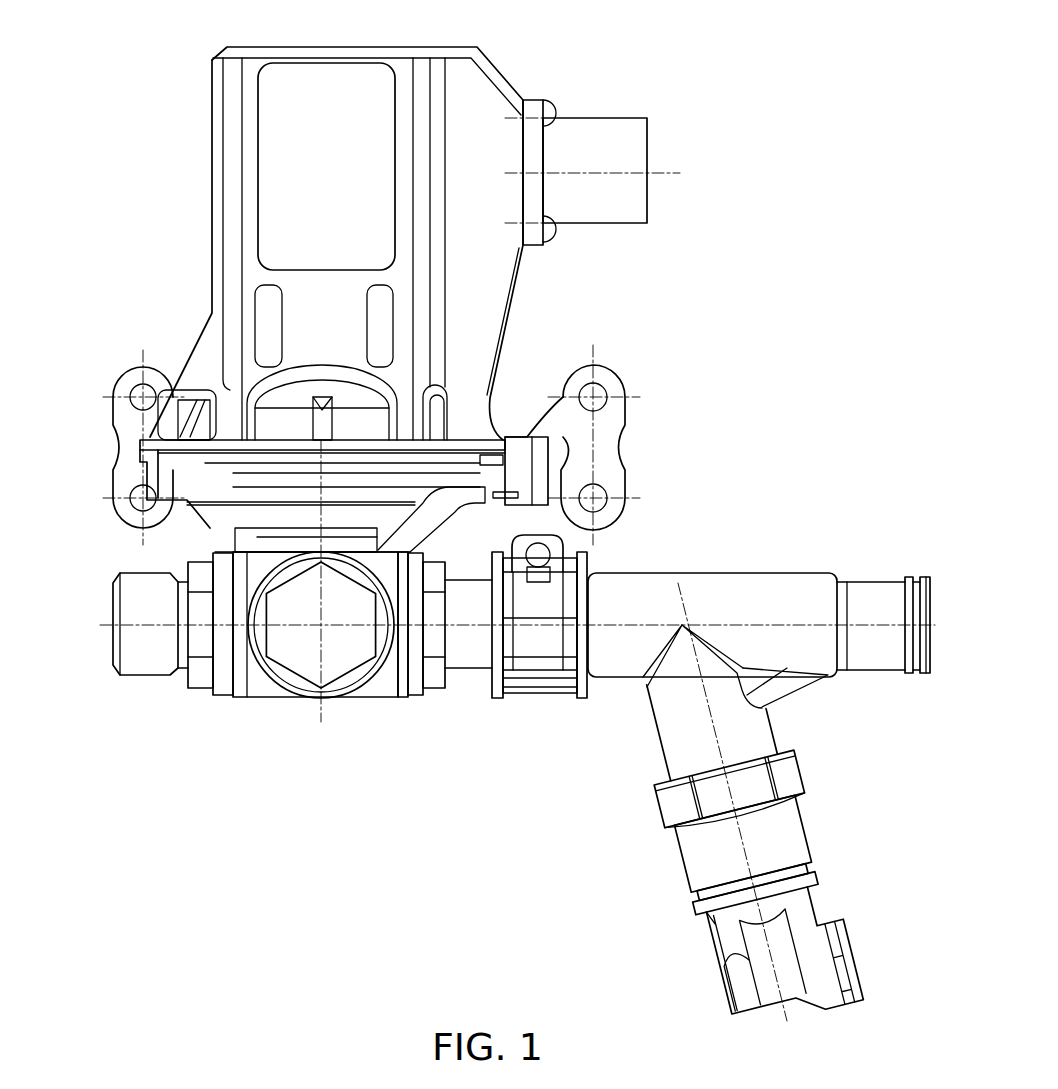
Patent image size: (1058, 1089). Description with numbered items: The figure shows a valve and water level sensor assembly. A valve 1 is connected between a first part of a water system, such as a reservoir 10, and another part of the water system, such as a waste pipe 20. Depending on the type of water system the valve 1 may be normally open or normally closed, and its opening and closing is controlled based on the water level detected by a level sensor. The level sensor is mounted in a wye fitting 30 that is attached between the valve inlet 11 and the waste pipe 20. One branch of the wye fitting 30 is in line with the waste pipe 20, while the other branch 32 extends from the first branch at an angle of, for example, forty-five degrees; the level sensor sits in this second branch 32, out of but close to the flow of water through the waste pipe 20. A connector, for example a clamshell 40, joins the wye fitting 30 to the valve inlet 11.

The reservoir 10 is at (162, 127).
The valve 1 is at (268, 709).
The valve inlet 11 is at (437, 690).
The clamshell 40 is at (547, 697).
The wye fitting 30 is at (658, 605).
The waste pipe 20 is at (868, 602).
The second branch 32 is at (745, 733).